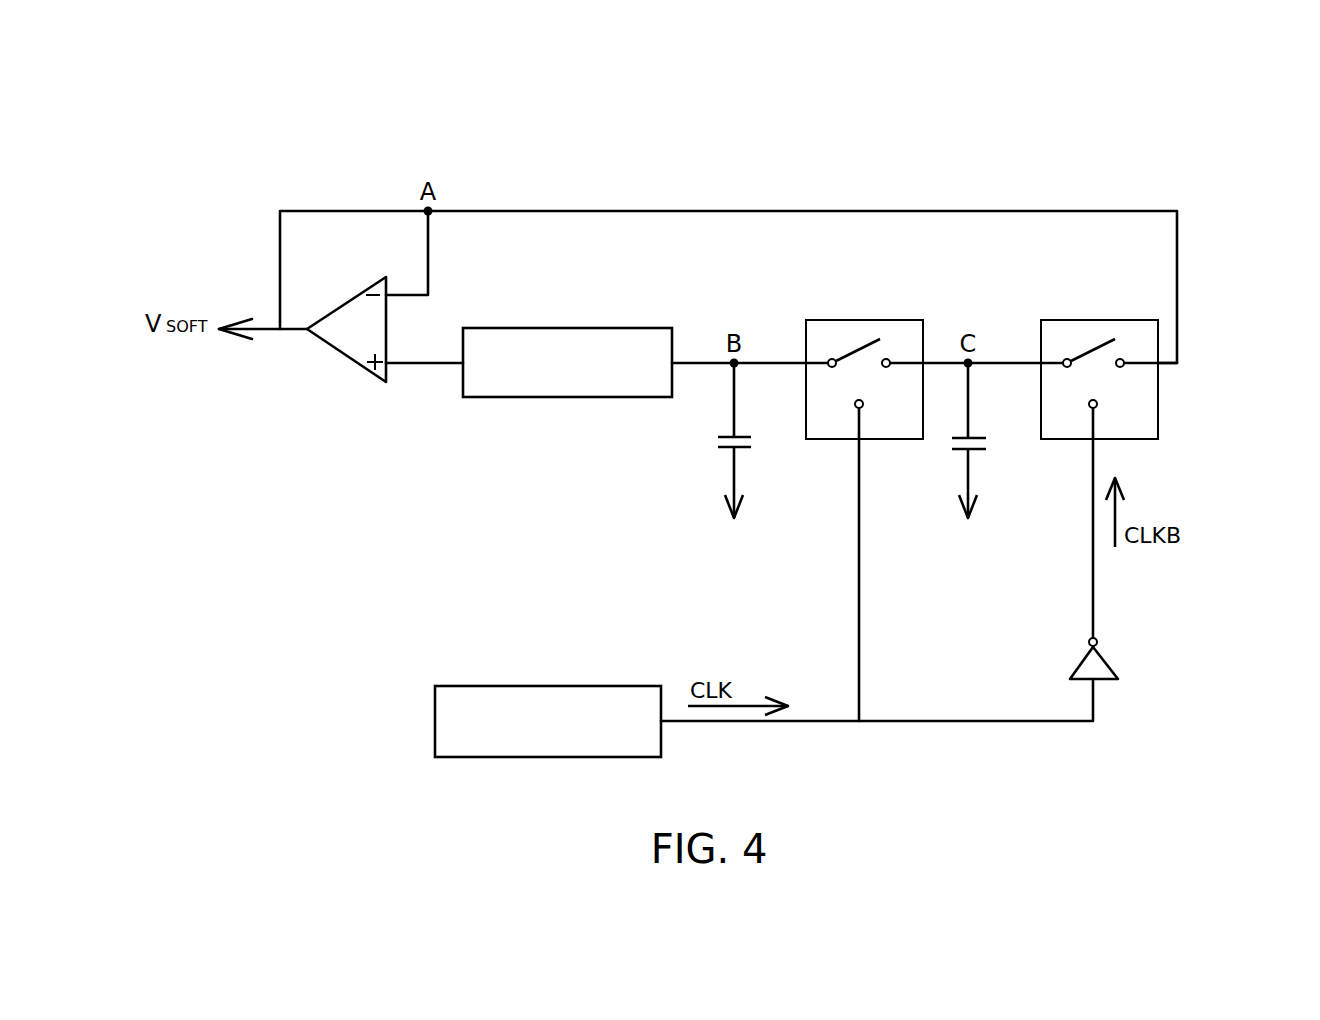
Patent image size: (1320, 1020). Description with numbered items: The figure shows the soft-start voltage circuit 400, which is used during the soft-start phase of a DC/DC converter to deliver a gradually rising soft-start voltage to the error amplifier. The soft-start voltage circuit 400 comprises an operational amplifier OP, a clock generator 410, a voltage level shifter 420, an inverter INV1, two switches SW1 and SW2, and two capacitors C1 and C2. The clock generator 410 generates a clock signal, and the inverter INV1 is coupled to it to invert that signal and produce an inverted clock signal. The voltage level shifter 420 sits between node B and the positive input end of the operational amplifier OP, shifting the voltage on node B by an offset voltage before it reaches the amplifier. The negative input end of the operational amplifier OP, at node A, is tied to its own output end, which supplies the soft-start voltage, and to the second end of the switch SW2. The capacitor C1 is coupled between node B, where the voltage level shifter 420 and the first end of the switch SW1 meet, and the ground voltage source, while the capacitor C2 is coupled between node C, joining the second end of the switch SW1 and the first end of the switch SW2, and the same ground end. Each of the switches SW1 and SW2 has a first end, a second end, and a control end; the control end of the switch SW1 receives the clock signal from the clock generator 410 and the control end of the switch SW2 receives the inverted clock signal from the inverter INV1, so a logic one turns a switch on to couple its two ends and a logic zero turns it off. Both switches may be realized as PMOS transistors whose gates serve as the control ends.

The soft-start voltage circuit 400 is at (1173, 166).
The clock generator 410 is at (567, 685).
The voltage level shifter 420 is at (568, 400).
The operational amplifier OP is at (343, 355).
The switch SW1 is at (864, 347).
The switch SW2 is at (1099, 347).
The capacitor C1 is at (725, 460).
The capacitor C2 is at (959, 460).
The inverter INV1 is at (1144, 657).